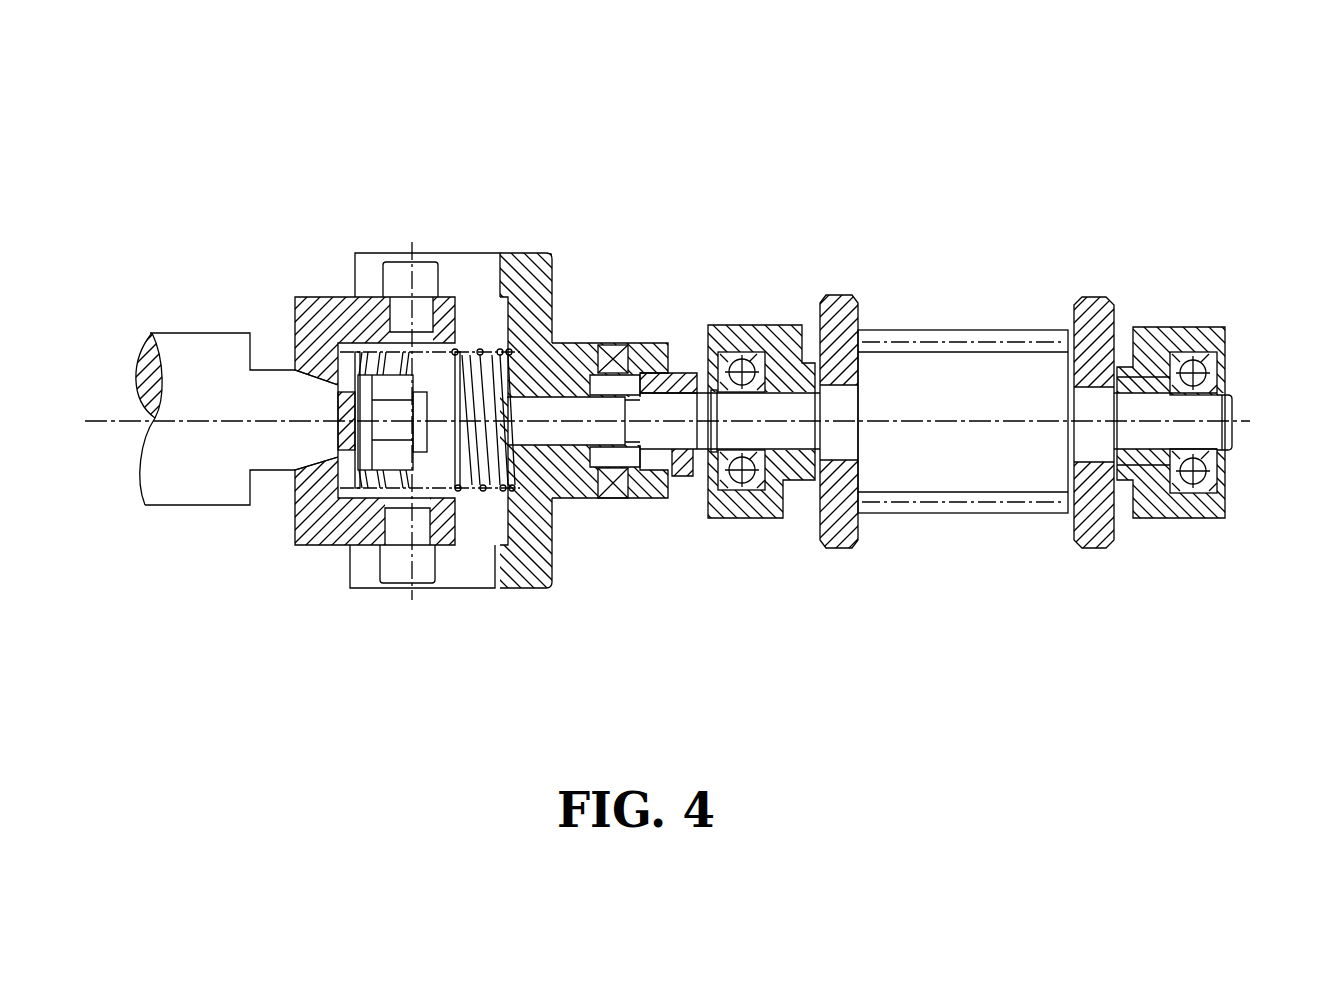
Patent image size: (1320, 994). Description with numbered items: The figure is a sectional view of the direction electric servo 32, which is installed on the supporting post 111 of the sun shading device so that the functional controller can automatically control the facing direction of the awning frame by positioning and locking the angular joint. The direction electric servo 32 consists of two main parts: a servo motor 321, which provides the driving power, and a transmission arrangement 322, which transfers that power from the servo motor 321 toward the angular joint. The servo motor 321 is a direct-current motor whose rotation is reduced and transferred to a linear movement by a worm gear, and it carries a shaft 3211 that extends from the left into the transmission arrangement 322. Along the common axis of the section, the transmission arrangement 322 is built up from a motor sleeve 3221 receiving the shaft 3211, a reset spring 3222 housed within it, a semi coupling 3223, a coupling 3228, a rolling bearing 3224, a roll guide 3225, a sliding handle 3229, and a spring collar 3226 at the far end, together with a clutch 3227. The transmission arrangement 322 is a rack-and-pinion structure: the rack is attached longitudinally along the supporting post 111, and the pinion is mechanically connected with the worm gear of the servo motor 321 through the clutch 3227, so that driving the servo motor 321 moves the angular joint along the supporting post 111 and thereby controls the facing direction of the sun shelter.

The direction electric servo 32 is at (752, 87).
The servo motor 321 is at (127, 470).
The shaft 3211 is at (195, 343).
The transmission arrangement 322 is at (677, 202).
The motor sleeve 3221 is at (320, 327).
The reset spring 3222 is at (470, 383).
The semi coupling 3223 is at (652, 363).
The rolling bearing 3224 is at (745, 368).
The roll guide 3225 is at (1080, 323).
The spring collar 3226 is at (1222, 390).
The clutch 3227 is at (525, 552).
The coupling 3228 is at (648, 487).
The sliding handle 3229 is at (1145, 505).
The supporting post 111 is at (1040, 285).